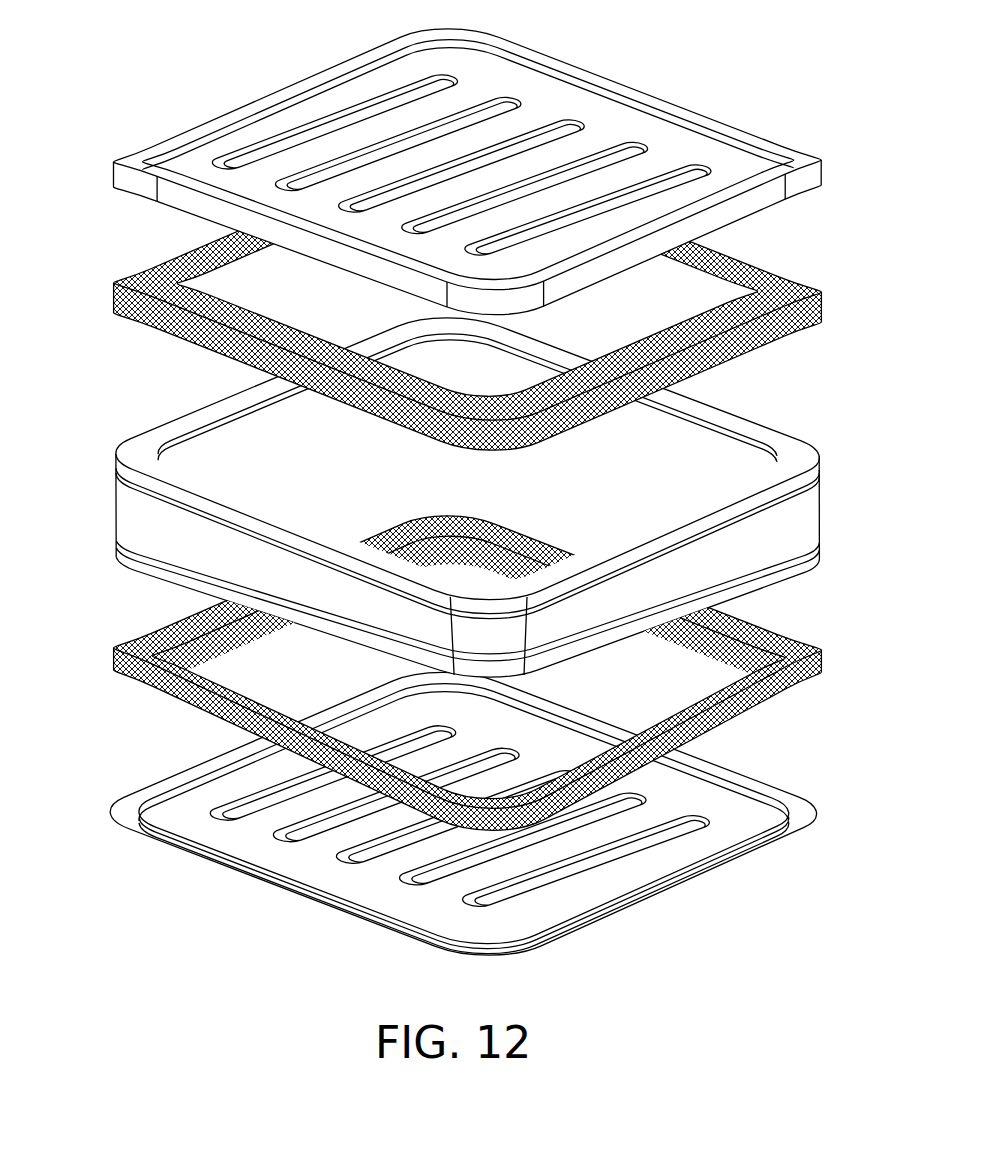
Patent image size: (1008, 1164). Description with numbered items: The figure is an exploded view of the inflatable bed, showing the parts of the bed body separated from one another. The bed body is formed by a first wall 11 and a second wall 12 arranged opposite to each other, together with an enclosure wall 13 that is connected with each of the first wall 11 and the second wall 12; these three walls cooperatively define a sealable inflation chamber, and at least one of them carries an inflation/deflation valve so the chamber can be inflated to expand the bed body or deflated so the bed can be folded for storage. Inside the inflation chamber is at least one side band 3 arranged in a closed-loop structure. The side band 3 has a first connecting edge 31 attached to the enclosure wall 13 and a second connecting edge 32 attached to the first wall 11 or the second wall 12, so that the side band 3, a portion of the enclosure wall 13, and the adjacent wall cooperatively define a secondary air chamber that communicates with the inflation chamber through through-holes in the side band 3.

The first wall 11 is at (607, 123).
The second wall 12 is at (370, 885).
The enclosure wall 13 is at (170, 540).
The side band 3 is at (491, 492).
The first connecting edge 31 is at (773, 635).
The second connecting edge 32 is at (777, 703).